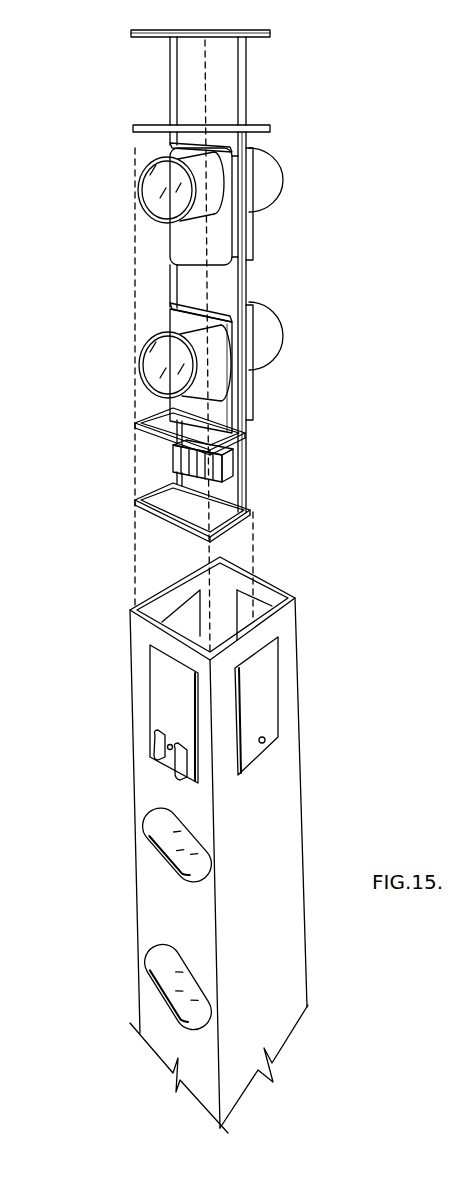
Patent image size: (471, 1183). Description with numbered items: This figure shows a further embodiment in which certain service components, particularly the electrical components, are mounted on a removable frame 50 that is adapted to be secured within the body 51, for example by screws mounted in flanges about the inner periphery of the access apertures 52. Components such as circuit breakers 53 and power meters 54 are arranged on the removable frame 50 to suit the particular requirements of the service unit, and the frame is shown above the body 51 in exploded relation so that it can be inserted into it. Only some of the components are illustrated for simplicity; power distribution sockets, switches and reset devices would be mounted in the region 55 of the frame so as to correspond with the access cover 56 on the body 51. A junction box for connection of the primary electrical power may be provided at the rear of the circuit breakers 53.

The top mounting plate 50 is at (270, 33).
The body 51 is at (298, 609).
The access apertures 52 is at (155, 699).
The circuit breakers 53 is at (173, 459).
The power meters 54 is at (138, 190).
The region 55 is at (225, 82).
The access cover 56 is at (173, 713).